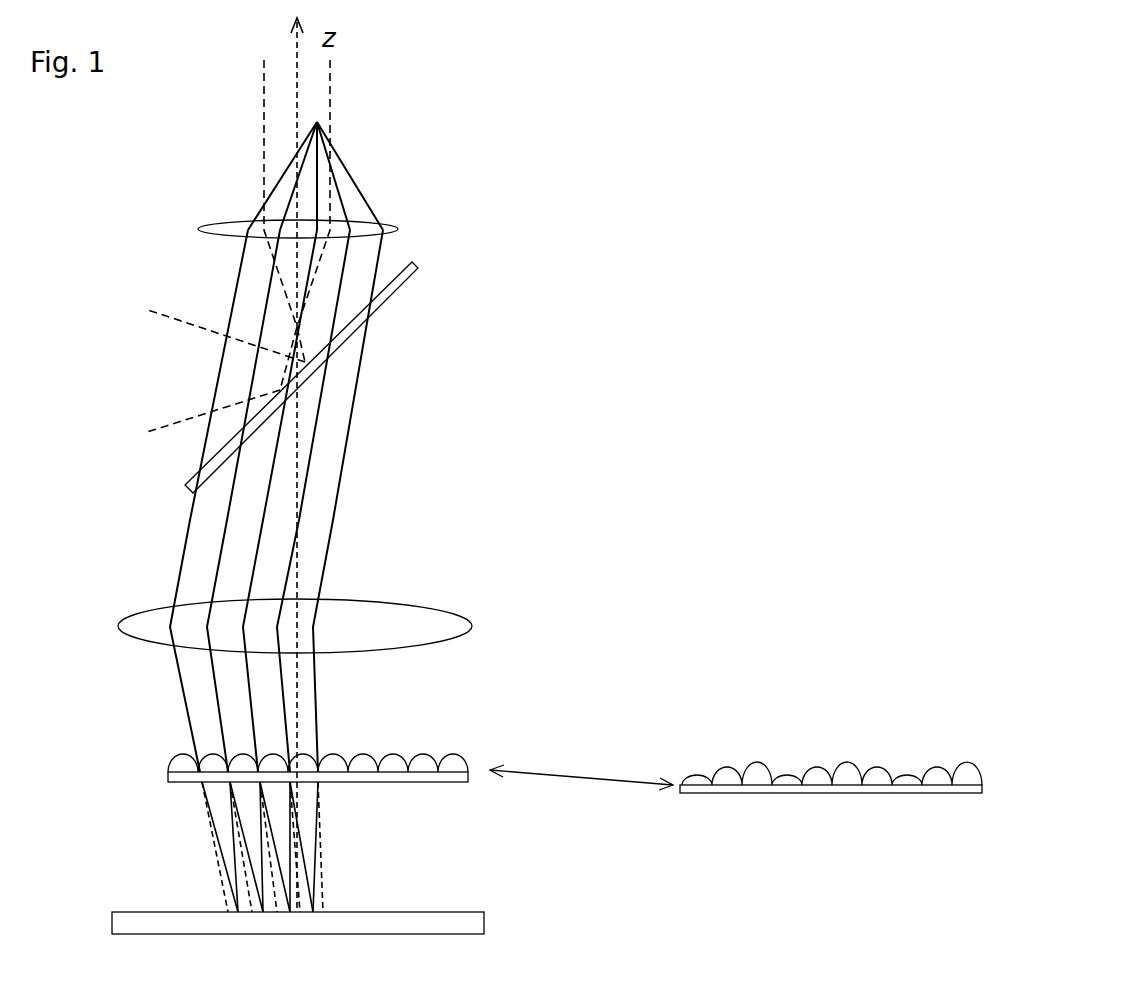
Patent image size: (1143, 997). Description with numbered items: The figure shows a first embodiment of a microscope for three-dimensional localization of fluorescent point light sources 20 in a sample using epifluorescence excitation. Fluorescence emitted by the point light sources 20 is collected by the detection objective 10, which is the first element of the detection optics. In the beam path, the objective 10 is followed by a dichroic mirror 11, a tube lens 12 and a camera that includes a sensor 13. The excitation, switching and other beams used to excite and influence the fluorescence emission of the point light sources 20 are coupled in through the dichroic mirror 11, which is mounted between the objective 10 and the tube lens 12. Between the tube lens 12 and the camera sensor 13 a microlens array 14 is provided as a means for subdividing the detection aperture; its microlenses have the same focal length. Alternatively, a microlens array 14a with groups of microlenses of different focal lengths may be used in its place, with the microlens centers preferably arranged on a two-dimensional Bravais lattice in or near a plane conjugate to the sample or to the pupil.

The point light sources 20 is at (317, 95).
The detection objective 10 is at (368, 233).
The dichroic mirror 11 is at (350, 327).
The tube lens 12 is at (428, 618).
The sensor 13 is at (448, 923).
The microlens array 14 is at (453, 765).
The microlens array 14a is at (967, 772).